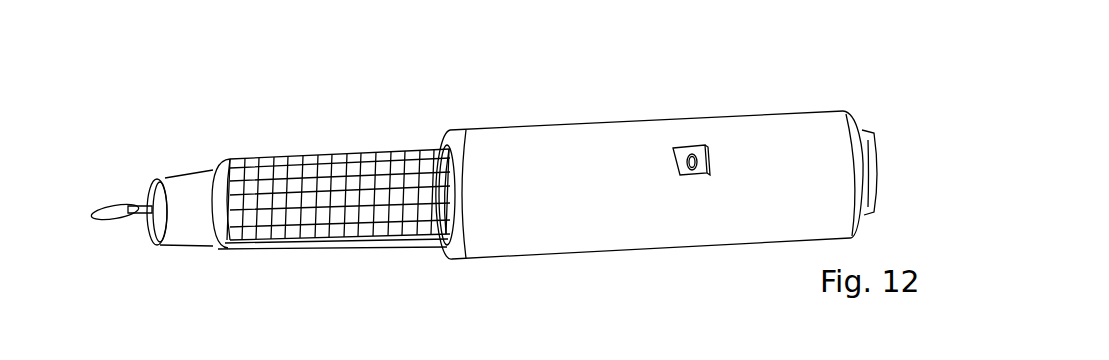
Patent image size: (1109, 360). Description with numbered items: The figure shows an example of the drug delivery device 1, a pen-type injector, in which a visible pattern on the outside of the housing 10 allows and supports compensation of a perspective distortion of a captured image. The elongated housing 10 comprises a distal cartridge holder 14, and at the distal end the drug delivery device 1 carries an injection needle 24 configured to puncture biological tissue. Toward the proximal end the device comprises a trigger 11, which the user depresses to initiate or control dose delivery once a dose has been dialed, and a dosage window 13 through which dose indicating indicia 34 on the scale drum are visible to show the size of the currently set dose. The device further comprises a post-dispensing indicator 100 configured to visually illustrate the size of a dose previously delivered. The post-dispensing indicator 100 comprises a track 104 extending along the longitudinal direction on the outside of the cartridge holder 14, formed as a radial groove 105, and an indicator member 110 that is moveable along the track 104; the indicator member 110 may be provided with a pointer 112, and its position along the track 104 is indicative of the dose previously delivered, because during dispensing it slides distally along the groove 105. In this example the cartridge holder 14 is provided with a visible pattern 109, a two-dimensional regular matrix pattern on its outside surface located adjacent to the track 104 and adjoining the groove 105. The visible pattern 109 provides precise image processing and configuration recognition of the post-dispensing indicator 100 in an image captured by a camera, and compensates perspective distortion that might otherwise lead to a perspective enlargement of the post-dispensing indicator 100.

The drug delivery device 1 is at (575, 108).
The housing 10 is at (295, 202).
The trigger 11 is at (867, 137).
The dosage window 13 is at (700, 173).
The cartridge holder 14 is at (260, 162).
The injection needle 24 is at (140, 210).
The dose indicating indicia 34 is at (690, 157).
The post-dispensing indicator 100 is at (418, 253).
The track 104 is at (218, 252).
The groove 105 is at (230, 265).
The visible pattern 109 is at (378, 148).
The indicator member 110 is at (354, 243).
The pointer 112 is at (320, 243).